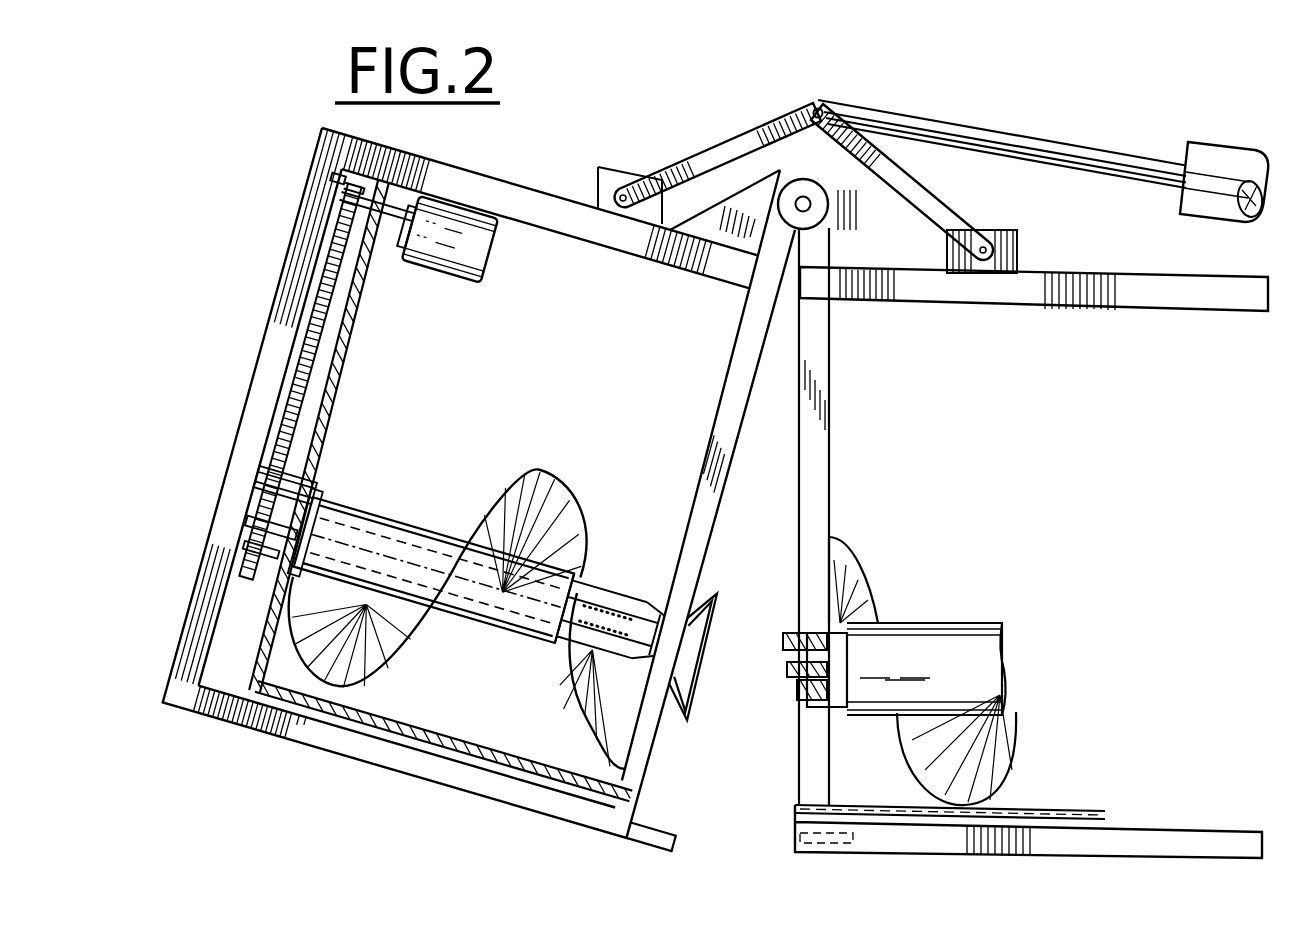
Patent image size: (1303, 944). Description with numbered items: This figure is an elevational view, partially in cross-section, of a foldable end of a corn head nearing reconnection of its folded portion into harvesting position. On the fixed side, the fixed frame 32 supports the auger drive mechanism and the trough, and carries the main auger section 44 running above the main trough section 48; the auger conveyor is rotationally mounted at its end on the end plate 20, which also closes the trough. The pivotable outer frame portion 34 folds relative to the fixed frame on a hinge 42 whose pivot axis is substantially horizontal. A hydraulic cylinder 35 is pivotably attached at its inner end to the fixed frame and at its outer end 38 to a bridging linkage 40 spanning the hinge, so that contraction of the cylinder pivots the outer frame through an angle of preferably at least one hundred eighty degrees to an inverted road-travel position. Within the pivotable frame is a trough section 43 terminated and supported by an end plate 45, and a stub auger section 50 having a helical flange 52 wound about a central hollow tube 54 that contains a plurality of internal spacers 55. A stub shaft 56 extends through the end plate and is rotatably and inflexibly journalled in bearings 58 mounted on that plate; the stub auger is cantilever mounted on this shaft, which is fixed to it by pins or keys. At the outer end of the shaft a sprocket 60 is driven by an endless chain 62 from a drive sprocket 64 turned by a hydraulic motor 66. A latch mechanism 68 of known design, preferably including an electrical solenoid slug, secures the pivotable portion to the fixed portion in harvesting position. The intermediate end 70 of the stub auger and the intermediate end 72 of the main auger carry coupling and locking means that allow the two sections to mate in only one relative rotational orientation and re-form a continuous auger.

The end plate 20 is at (288, 283).
The fixed frame 32 is at (1076, 269).
The outer frame portion 34 is at (511, 190).
The hydraulic cylinder 35 is at (1184, 150).
The outer end 38 is at (811, 108).
The bridging linkage 40 is at (950, 213).
The hinge 42 is at (808, 186).
The trough section 43 is at (430, 744).
The main auger section 44 is at (985, 610).
The end plate 45 is at (264, 610).
The main trough section 48 is at (1040, 806).
The stub auger section 50 is at (472, 480).
The helical flange 52 is at (543, 464).
The central hollow tube 54 is at (435, 610).
The internal spacer 55 is at (612, 582).
The stub shaft 56 is at (408, 520).
The bearing 58 is at (326, 487).
The sprocket 60 is at (260, 545).
The endless chain 62 is at (300, 343).
The drive sprocket 64 is at (335, 186).
The hydraulic motor 66 is at (489, 246).
The latch mechanism 68 is at (650, 833).
The intermediate end 70 is at (714, 678).
The intermediate end 72 is at (787, 707).